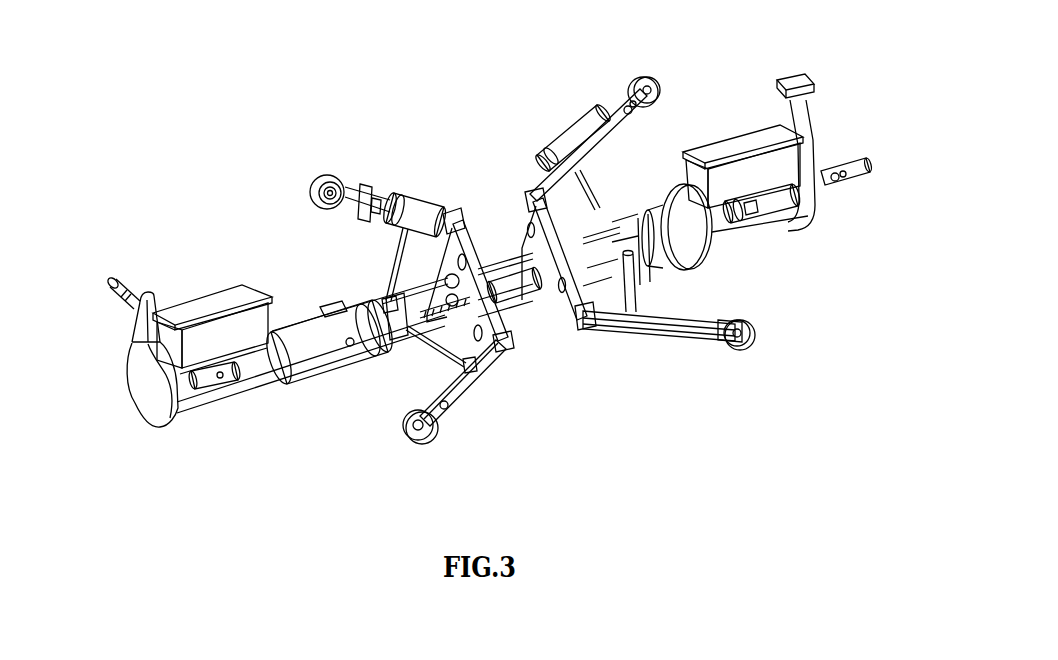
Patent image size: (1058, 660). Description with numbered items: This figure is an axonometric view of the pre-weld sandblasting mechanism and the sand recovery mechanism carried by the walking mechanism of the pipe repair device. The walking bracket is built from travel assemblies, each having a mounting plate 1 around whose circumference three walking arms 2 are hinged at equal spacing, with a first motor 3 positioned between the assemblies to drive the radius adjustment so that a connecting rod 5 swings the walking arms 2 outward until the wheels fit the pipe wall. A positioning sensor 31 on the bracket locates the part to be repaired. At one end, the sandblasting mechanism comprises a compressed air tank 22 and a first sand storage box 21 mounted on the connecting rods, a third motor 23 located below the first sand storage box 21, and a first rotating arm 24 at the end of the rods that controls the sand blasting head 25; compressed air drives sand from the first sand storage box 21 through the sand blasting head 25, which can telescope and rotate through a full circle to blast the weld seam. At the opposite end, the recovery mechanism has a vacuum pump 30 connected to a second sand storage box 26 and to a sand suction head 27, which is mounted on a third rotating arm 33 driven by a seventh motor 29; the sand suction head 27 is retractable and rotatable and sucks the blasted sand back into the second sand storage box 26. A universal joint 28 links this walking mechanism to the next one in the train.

The mounting plate 1 is at (387, 221).
The walking arm 2 is at (502, 391).
The first motor 3 is at (584, 361).
The connecting rod 5 is at (464, 398).
The first sand storage box 21 is at (198, 292).
The compressed air tank 22 is at (329, 377).
The third motor 23 is at (182, 409).
The first rotating arm 24 is at (114, 374).
The sand blasting head 25 is at (95, 263).
The second sand storage box 26 is at (749, 106).
The sand suction head 27 is at (849, 51).
The universal joint 28 is at (871, 220).
The seventh motor 29 is at (821, 264).
The vacuum pump 30 is at (782, 321).
The positioning sensor 31 is at (483, 235).
The third rotating arm 33 is at (855, 163).